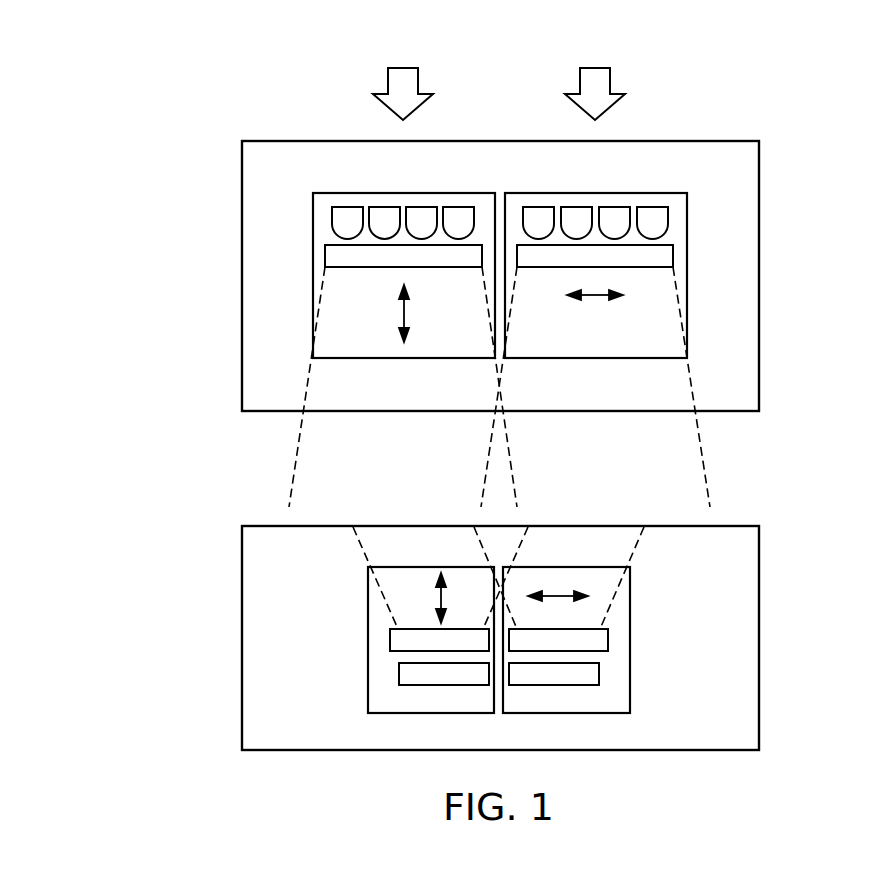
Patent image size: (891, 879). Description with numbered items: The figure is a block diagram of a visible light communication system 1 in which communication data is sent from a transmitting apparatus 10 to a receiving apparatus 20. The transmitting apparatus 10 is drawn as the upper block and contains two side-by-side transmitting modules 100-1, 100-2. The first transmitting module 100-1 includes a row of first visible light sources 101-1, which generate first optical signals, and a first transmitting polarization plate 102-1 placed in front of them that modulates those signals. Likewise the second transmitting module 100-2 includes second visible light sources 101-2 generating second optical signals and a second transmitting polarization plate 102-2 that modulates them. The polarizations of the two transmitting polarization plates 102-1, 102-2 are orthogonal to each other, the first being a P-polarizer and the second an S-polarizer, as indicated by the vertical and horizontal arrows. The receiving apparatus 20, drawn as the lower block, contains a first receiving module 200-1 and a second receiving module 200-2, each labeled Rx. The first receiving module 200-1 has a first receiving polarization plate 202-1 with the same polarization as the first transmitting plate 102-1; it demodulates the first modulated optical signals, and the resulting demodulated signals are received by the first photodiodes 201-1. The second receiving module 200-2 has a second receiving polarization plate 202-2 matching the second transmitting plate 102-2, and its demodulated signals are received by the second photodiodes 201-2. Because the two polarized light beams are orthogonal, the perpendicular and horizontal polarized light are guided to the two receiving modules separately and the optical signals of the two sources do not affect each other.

The visible light communication system 1 is at (851, 58).
The transmitting apparatus 10 is at (759, 172).
The first transmitting module 100-1 is at (340, 193).
The second transmitting module 100-2 is at (655, 193).
The first visible light sources 101-1 is at (332, 222).
The second visible light sources 101-2 is at (668, 220).
The first transmitting polarization plate 102-1 is at (325, 255).
The second transmitting polarization plate 102-2 is at (673, 254).
The receiving apparatus 20 is at (759, 557).
The first receiving module 200-1 is at (368, 604).
The second receiving module 200-2 is at (630, 603).
The first photodiodes 201-1 is at (399, 674).
The second photodiodes 201-2 is at (599, 674).
The first receiving polarization plate 202-1 is at (390, 640).
The second receiving polarization plate 202-2 is at (608, 640).